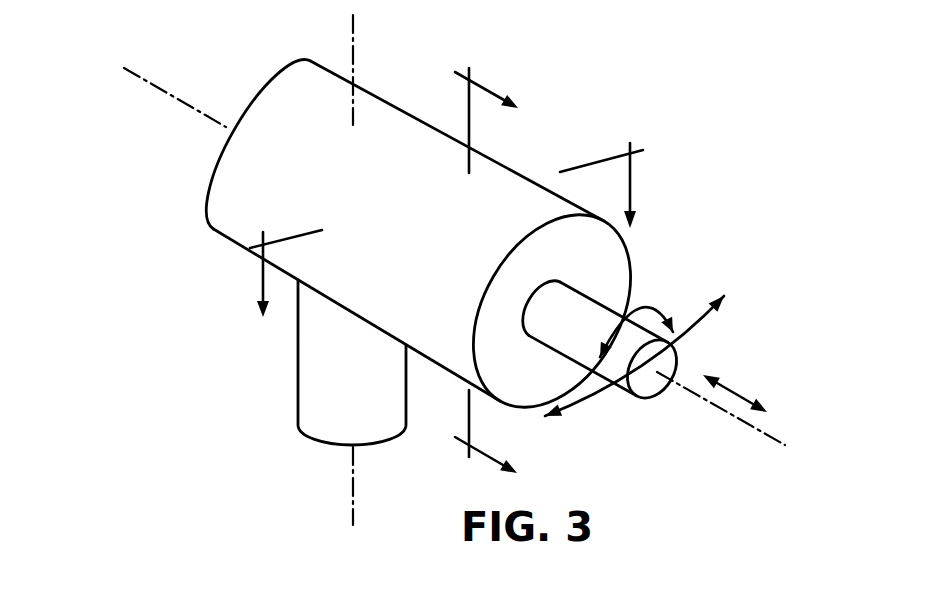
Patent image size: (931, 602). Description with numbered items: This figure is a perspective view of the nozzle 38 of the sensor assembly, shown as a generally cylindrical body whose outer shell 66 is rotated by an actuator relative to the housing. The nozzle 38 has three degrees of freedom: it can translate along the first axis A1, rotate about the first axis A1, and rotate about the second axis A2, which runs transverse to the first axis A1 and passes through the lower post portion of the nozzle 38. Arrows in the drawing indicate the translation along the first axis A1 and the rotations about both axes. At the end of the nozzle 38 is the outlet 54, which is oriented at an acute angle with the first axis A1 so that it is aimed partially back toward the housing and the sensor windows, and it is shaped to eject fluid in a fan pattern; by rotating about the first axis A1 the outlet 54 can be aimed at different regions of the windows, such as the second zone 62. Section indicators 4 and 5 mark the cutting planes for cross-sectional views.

The nozzle 38 is at (424, 280).
The outlet 54 is at (651, 392).
The second zone 62 is at (298, 375).
The shell 66 is at (213, 227).
The section line 4- 4 is at (474, 259).
The section line 5- 5 is at (447, 209).
The first axis A1 is at (471, 265).
The second axis A2 is at (353, 280).